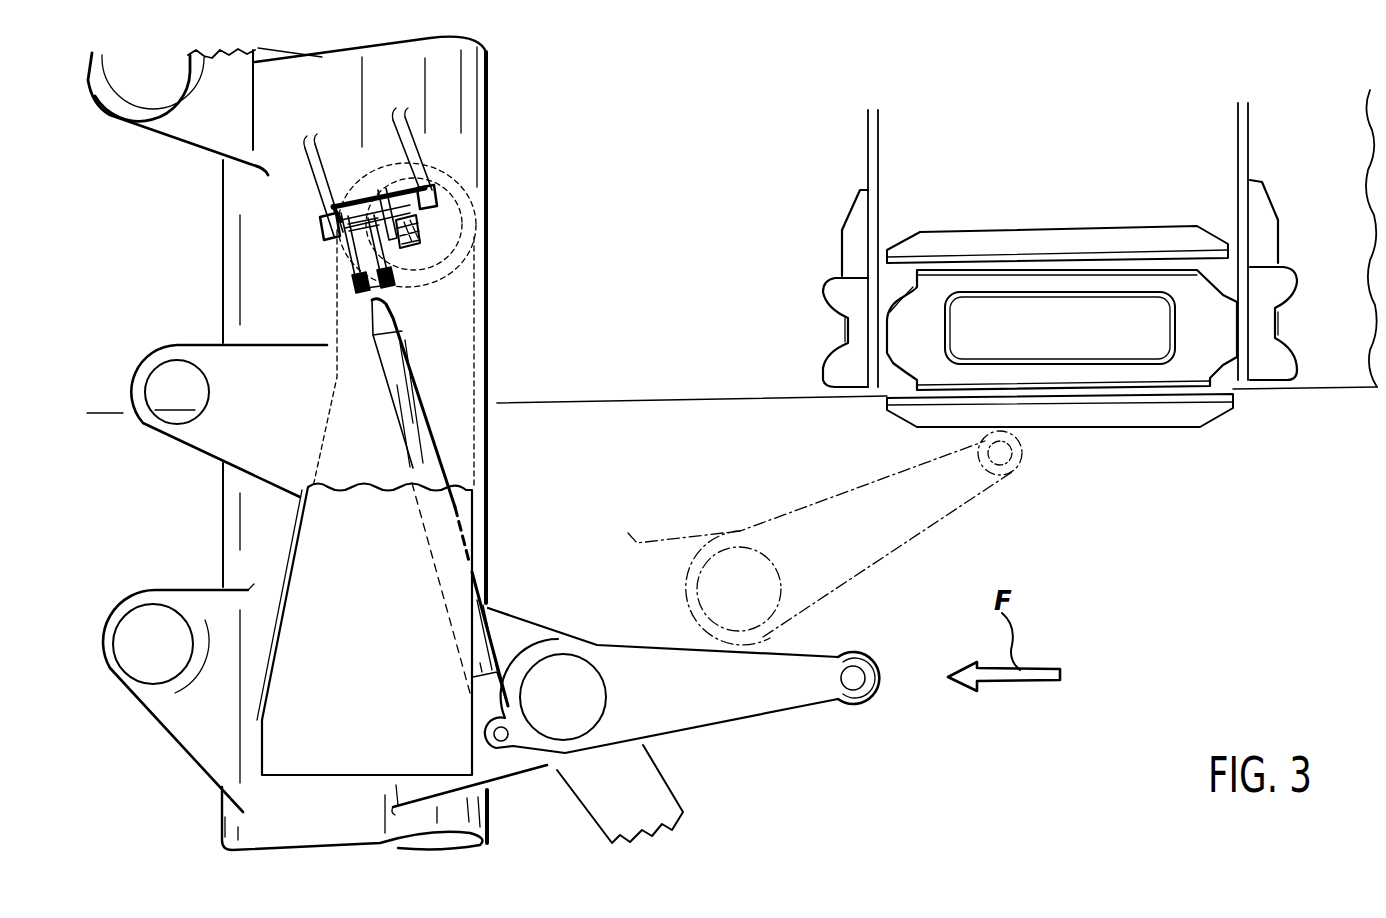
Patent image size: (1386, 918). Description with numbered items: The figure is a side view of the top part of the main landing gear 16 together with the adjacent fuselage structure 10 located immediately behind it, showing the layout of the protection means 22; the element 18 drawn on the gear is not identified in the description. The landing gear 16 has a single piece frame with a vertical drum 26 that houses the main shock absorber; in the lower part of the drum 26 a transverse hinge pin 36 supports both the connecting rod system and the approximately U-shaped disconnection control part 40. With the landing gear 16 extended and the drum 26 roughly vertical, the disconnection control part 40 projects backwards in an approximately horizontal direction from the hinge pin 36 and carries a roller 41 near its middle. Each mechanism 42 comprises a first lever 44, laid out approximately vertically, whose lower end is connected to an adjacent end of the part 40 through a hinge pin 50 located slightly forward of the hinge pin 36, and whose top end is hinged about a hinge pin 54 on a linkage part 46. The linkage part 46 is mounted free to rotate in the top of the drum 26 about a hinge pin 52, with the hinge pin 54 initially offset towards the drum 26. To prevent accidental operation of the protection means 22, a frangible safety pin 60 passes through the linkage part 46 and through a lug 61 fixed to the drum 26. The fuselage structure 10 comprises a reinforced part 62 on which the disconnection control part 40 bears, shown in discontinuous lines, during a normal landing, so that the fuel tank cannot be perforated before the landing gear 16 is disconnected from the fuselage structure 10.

The fuselage structure 10 is at (1315, 388).
The main landing gear 16 is at (607, 345).
The frame 18 is at (213, 808).
The protection means 22 is at (613, 513).
The vertical drum 26 is at (450, 87).
The hinge pin 36 is at (593, 705).
The disconnection control part 40 is at (647, 645).
The roller 41 is at (873, 688).
The mechanism 42 is at (443, 432).
The first lever 44 is at (388, 372).
The linkage part 46 is at (320, 192).
The hinge pin 50 is at (505, 748).
The hinge pin 52 is at (430, 195).
The hinge pin 54 is at (350, 288).
The safety pin 60 is at (423, 233).
The lug 61 is at (397, 264).
The reinforced part 62 is at (1163, 427).